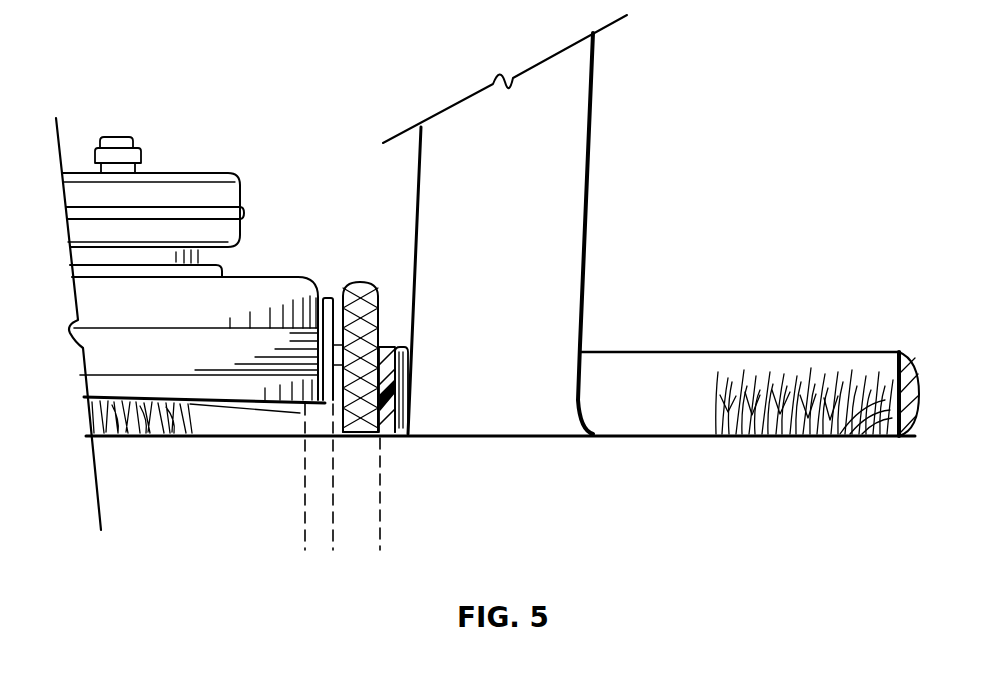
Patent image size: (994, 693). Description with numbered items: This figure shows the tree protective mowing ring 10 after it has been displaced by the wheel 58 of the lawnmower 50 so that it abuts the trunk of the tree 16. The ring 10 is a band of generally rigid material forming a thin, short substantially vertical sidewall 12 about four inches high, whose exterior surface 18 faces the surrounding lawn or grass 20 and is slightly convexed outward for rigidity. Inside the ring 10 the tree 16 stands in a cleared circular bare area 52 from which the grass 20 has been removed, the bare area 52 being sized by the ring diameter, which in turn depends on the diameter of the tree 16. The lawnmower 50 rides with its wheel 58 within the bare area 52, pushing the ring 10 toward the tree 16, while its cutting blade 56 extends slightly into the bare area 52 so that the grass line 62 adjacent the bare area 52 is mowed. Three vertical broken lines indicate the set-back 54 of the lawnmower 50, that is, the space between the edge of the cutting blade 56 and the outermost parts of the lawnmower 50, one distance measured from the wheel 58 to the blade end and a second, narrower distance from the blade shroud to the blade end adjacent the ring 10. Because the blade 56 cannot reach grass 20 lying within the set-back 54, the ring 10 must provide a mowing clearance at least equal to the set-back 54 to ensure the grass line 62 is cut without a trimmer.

The mowing ring 10 is at (749, 324).
The sidewall 12 is at (396, 434).
The tree 16 is at (590, 122).
The exterior surface 18 is at (381, 345).
The grass 20 is at (797, 364).
The lawnmower 50 is at (218, 192).
The bare area 52 is at (632, 407).
The set-back 54 is at (320, 552).
The cutting blade 56 is at (268, 407).
The wheel 58 is at (345, 305).
The grass line 62 is at (716, 370).